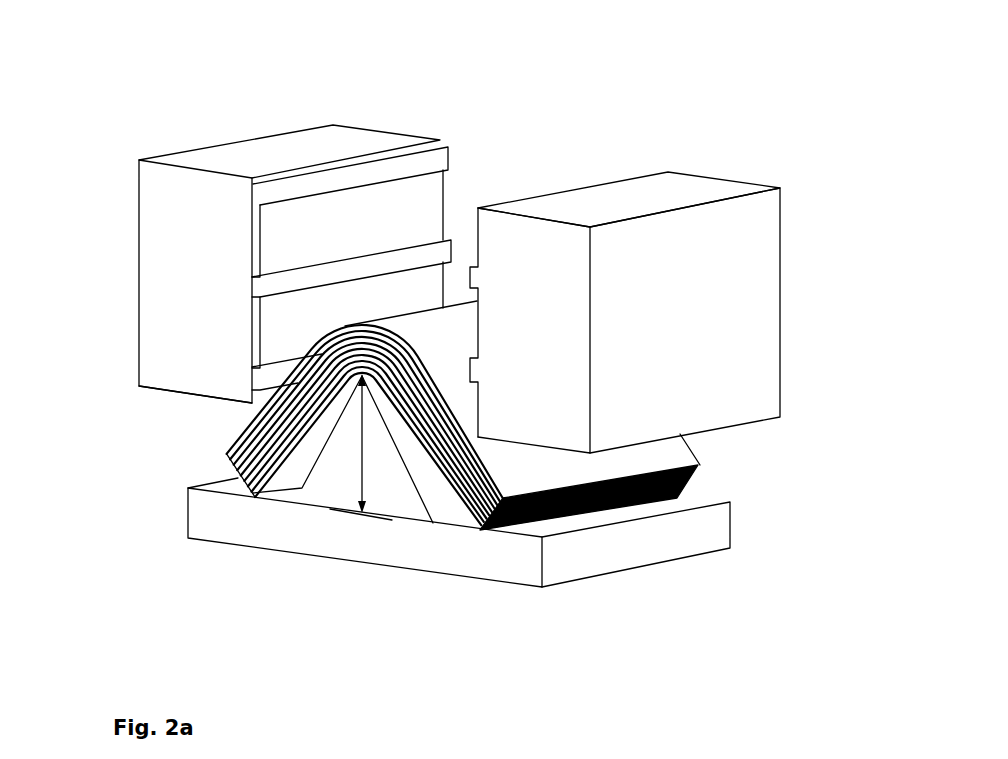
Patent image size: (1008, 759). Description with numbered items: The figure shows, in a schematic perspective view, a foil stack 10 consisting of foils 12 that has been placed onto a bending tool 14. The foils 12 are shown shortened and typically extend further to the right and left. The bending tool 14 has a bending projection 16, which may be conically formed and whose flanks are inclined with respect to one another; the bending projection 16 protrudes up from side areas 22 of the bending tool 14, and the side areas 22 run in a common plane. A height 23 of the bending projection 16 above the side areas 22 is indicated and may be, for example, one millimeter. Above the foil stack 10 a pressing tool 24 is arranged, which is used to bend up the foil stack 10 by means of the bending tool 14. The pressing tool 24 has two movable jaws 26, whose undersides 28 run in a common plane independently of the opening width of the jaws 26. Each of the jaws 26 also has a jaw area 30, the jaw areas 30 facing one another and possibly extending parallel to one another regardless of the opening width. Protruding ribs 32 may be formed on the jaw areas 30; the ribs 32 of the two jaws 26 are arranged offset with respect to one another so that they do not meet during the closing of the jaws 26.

The foil stack 10 is at (724, 456).
The foils 12 is at (250, 462).
The bending tool 14 is at (364, 586).
The bending projection 16 is at (333, 455).
The side areas 22 is at (220, 500).
The height 23 is at (361, 447).
The pressing tool 24 is at (618, 86).
The jaws 26 is at (160, 230).
The undersides 28 is at (190, 403).
The jaw area 30 is at (420, 199).
The ribs 32 is at (302, 282).